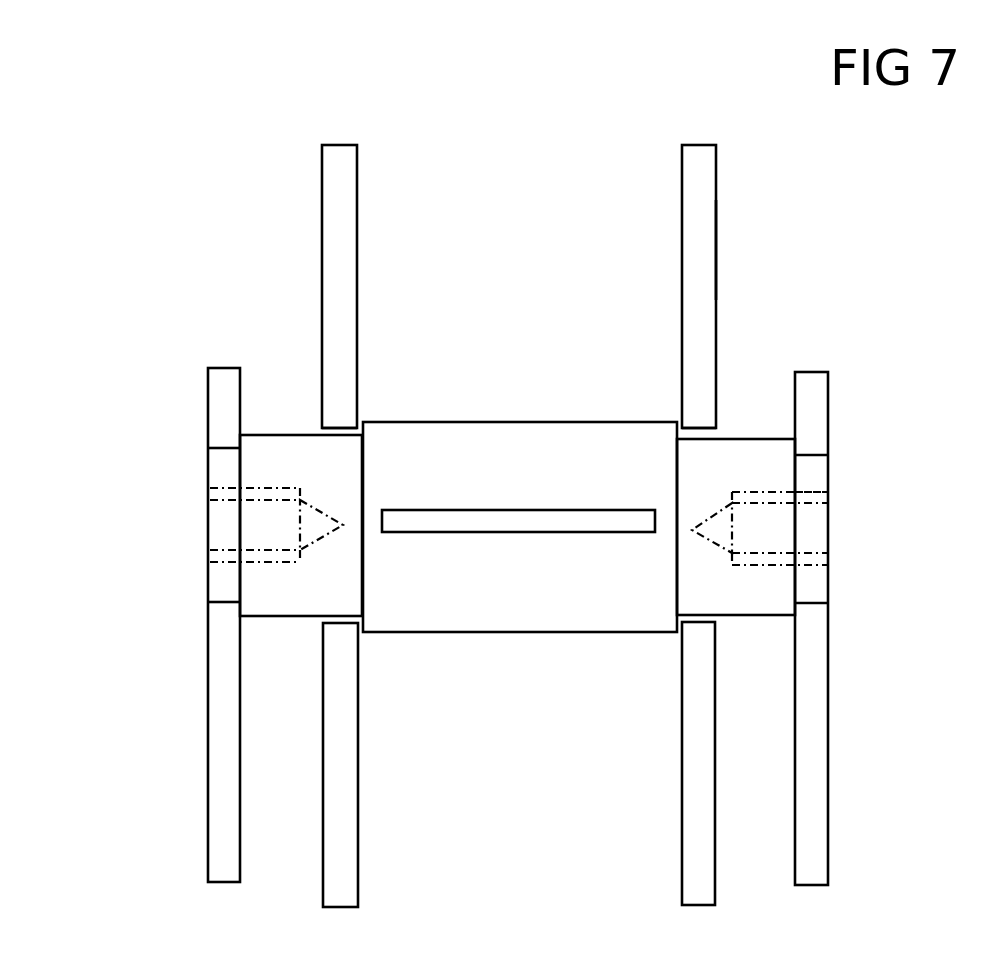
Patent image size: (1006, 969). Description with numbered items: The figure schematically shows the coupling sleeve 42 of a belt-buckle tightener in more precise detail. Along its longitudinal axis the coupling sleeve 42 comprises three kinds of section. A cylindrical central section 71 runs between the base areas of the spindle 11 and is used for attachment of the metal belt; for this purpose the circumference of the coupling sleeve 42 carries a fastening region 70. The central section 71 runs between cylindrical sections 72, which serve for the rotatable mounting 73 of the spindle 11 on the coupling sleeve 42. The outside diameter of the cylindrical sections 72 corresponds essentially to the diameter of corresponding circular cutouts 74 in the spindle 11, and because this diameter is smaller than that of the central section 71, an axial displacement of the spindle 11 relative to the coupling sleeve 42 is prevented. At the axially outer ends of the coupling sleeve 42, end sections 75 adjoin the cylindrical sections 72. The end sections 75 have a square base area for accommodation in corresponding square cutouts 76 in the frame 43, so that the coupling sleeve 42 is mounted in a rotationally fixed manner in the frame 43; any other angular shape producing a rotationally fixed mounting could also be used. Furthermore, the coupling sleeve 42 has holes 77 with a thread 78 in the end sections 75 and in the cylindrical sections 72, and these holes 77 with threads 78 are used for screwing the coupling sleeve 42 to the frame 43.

The spindle 11 is at (700, 258).
The coupling sleeve 42 is at (466, 398).
The frame 43 is at (207, 758).
The fastening region 70 is at (525, 520).
The cylindrical central section 71 is at (548, 420).
The cylindrical sections 72 is at (295, 617).
The rotatable mounting 73 is at (362, 407).
The circular cutouts 74 is at (320, 427).
The end sections 75 is at (208, 467).
The square cutouts 76 is at (208, 592).
The holes 77 is at (208, 502).
The thread 78 is at (208, 562).